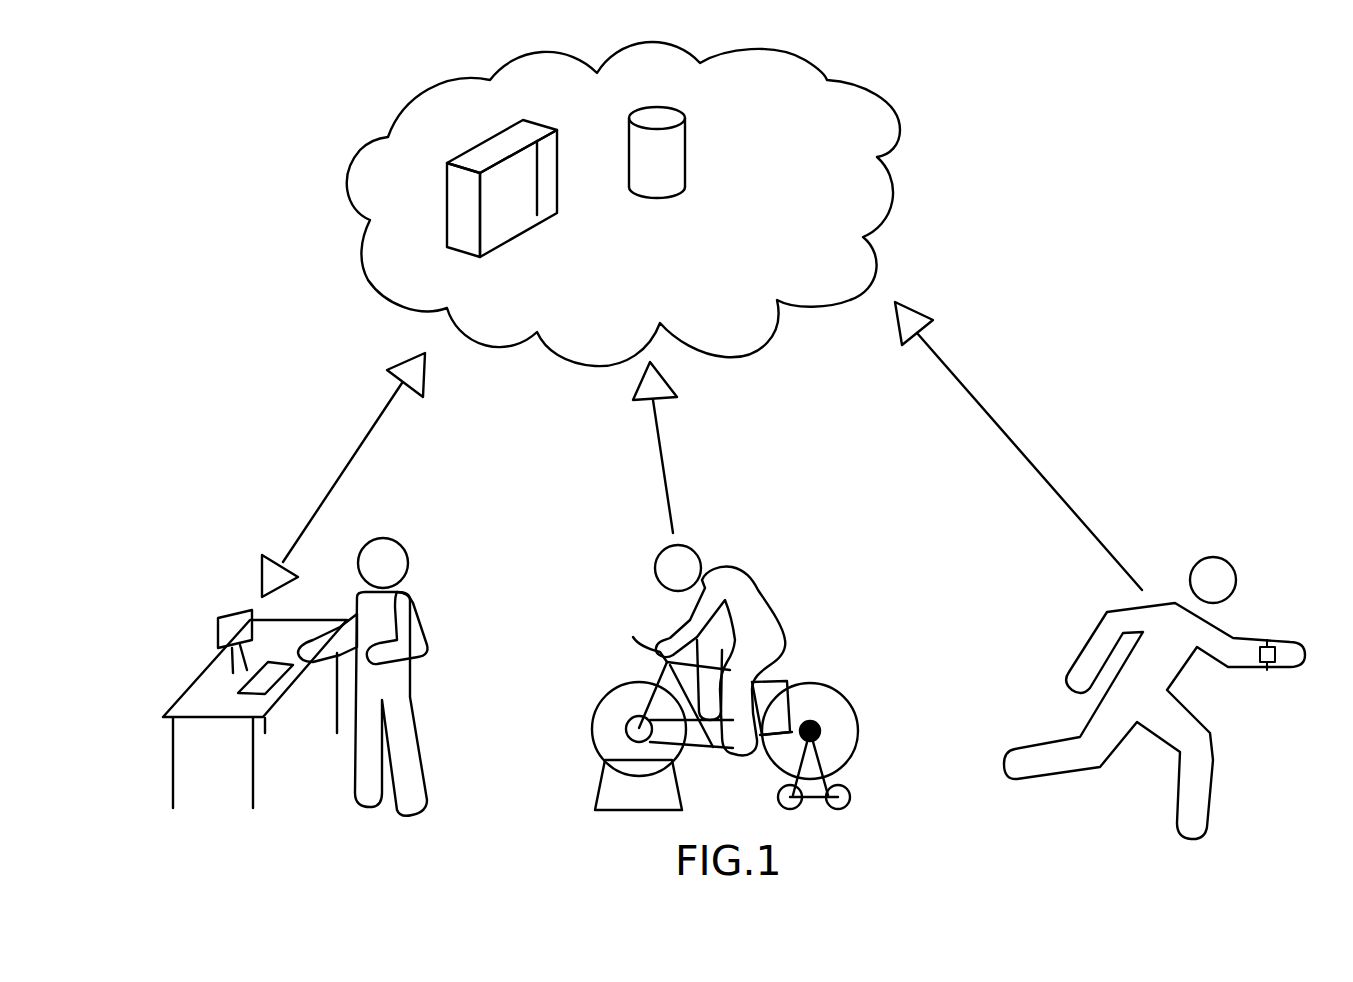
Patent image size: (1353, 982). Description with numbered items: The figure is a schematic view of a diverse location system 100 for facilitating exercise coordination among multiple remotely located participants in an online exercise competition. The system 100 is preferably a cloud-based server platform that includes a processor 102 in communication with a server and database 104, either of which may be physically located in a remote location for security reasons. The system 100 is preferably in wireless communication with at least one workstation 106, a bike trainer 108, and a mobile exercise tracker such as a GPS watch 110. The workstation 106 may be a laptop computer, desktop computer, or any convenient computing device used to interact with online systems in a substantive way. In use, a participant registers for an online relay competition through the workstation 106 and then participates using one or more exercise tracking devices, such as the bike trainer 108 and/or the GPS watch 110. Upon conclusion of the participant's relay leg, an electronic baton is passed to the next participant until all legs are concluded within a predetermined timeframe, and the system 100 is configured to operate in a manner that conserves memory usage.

The diverse location system 100 is at (326, 128).
The processor 102 is at (460, 238).
The database 104 is at (670, 165).
The workstation 106 is at (210, 635).
The bike trainer 108 is at (598, 760).
The GPS watch 110 is at (1268, 637).